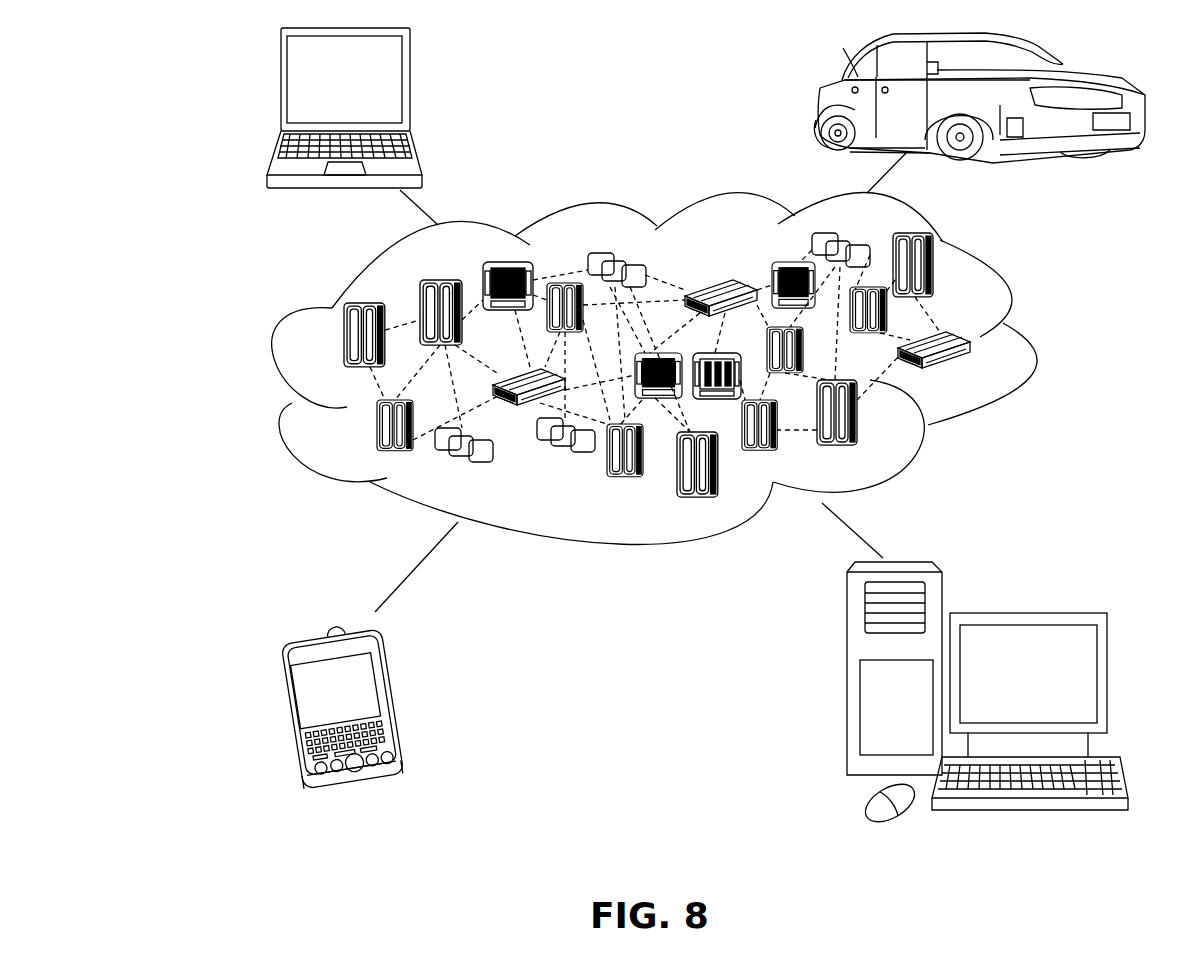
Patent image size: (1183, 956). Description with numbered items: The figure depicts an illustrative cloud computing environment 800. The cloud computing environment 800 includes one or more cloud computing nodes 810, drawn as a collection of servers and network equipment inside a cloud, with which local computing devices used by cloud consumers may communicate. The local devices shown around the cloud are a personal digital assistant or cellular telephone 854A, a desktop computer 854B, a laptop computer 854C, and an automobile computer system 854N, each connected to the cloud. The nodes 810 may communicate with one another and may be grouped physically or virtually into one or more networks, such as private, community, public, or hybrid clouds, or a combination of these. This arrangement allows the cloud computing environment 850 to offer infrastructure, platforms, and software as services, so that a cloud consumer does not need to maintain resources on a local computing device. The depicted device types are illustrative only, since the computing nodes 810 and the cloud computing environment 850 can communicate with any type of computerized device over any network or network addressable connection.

The cloud computing environment 800 is at (128, 63).
The cloud computing environment 850 is at (1028, 343).
The cloud computing nodes 810 is at (968, 370).
The personal digital assistant (PDA) or cellular telephone 854A is at (398, 700).
The desktop computer 854B is at (1025, 612).
The laptop computer 854C is at (410, 90).
The automobile computer system 854N is at (818, 103).